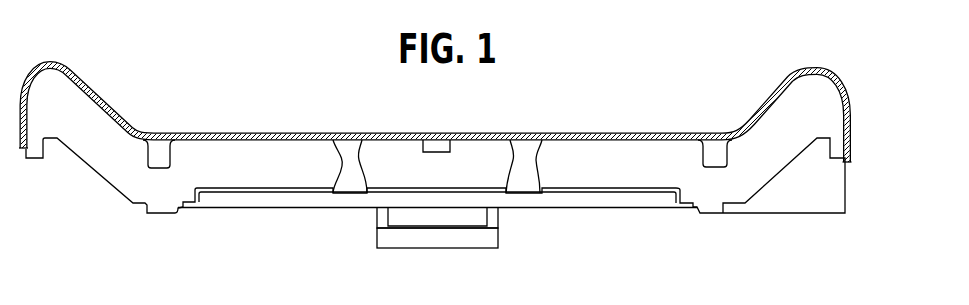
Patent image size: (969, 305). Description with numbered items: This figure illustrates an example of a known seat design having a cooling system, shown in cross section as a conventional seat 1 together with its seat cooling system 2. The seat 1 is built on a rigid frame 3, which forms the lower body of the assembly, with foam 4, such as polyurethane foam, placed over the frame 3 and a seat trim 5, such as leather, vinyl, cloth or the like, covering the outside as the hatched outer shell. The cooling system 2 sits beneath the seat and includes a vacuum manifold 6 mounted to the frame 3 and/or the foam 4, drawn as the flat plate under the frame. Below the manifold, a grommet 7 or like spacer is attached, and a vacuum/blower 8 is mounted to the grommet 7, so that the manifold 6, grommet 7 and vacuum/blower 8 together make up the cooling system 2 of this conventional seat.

The seat 1 is at (843, 58).
The seat cooling system 2 is at (513, 245).
The rigid frame 3 is at (792, 189).
The foam 4 is at (810, 110).
The seat trim 5 is at (92, 84).
The vacuum manifold 6 is at (228, 207).
The grommet 7 is at (376, 215).
The vacuum/blower 8 is at (377, 240).